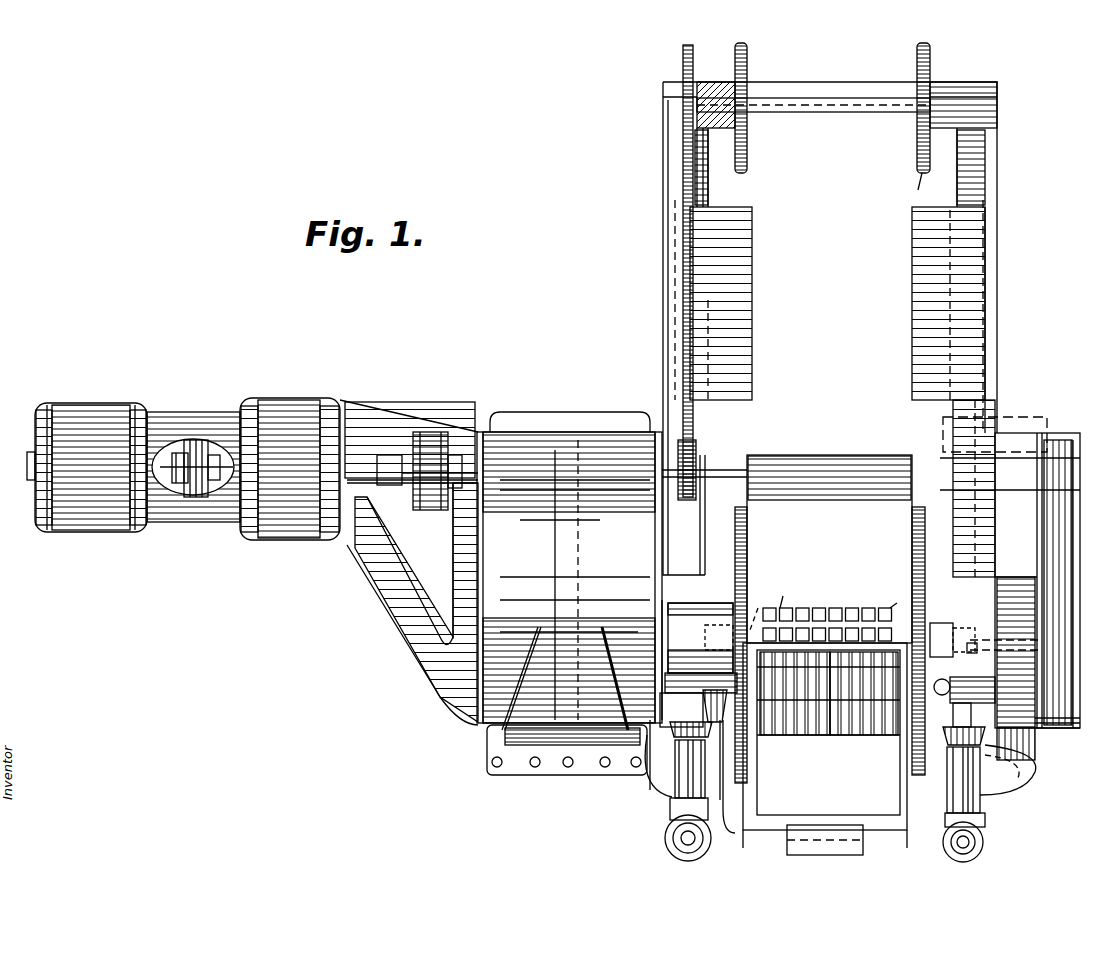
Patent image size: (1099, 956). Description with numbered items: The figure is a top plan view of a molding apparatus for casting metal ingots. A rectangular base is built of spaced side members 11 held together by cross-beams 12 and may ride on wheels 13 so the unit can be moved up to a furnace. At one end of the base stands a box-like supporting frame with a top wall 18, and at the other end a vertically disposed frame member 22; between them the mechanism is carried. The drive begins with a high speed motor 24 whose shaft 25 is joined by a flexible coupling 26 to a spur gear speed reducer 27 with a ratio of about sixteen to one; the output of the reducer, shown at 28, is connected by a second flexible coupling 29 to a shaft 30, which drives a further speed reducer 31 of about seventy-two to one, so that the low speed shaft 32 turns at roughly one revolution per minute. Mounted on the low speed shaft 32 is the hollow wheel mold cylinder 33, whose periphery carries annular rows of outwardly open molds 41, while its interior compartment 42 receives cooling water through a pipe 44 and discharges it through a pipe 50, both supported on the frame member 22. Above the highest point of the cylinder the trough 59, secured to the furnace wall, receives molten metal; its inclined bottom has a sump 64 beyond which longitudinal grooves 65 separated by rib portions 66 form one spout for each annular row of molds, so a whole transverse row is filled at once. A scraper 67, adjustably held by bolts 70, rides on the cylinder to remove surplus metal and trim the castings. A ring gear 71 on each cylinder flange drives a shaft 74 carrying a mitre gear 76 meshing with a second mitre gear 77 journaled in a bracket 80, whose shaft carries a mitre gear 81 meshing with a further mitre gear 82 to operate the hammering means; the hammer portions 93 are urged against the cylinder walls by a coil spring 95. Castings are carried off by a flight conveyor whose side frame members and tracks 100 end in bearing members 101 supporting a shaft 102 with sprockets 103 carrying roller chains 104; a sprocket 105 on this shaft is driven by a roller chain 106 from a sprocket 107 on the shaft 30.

The side members 11 is at (935, 460).
The cross-beams 12 is at (569, 594).
The wheels 13 is at (555, 455).
The top wall 18 is at (190, 530).
The frame member 22 is at (1025, 590).
The high speed motor 24 is at (80, 415).
The shaft 25 is at (163, 440).
The flexible coupling 26 is at (198, 440).
The spur gear speed reducer 27 is at (280, 418).
The bearing 28 is at (388, 468).
The second flexible coupling 29 is at (432, 440).
The shaft 30 is at (468, 460).
The further speed reducer 31 is at (520, 450).
The low speed shaft 32 is at (663, 620).
The cylinder 33 is at (786, 596).
The molds 41 is at (805, 608).
The compartment 42 is at (829, 549).
The pipe 44 is at (1048, 718).
The pipe 50 is at (1040, 643).
The trough 59 is at (825, 737).
The sump 64 is at (787, 835).
The longitudinal grooves 65 is at (855, 740).
The longitudinal rib portions 66 is at (815, 740).
The scraper 67 is at (890, 608).
The bolts 70 is at (665, 655).
The ring gear 71 is at (747, 538).
The shaft 74 is at (648, 690).
The mitre gear 76 is at (816, 790).
The second mitre gear 77 is at (640, 765).
The bracket 80 is at (665, 745).
The mitre gear 81 is at (668, 818).
The mitre gear 82 is at (664, 838).
The right angled inwardly extending portion 93 is at (700, 617).
The coil spring 95 is at (768, 606).
The side frame members and tracks 100 is at (668, 268).
The bearing members 101 is at (712, 85).
The shaft 102 is at (828, 90).
The sprockets 103 is at (748, 138).
The roller chains 104 is at (920, 178).
The sprocket 105 is at (683, 62).
The roller chain 106 is at (685, 352).
The sprocket 107 is at (715, 458).